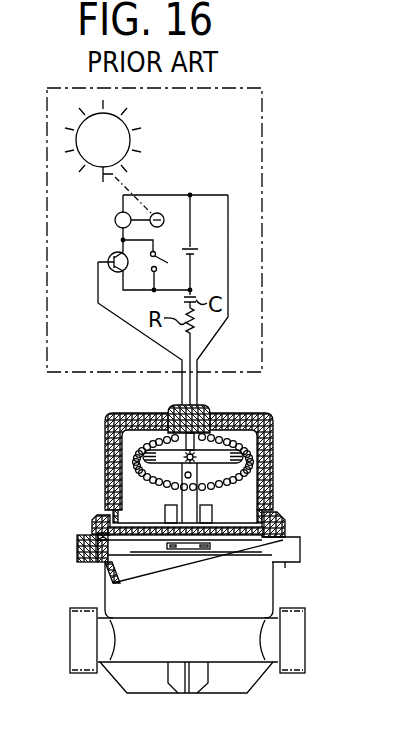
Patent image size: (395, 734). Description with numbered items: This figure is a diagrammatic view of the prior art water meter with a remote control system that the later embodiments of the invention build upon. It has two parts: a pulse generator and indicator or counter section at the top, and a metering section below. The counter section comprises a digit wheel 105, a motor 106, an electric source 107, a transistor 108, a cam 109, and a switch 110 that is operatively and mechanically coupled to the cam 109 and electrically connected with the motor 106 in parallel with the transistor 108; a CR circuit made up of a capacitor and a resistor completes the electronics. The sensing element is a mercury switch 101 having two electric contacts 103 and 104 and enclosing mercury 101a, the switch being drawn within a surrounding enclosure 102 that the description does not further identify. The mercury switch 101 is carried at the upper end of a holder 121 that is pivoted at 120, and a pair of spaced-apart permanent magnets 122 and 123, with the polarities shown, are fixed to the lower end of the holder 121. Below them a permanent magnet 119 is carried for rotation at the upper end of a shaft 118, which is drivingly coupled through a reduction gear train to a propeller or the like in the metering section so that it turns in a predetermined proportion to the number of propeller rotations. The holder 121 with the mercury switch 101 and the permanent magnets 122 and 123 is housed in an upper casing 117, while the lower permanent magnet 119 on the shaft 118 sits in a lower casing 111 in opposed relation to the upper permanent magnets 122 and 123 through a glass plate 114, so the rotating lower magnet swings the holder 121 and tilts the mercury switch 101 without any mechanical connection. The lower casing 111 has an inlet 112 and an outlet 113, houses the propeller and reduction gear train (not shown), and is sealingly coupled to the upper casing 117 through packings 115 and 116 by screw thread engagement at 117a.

The mercury switch 101 is at (163, 436).
The mercury 101a is at (198, 444).
The housing 102 is at (258, 418).
The electric contact 103 is at (246, 456).
The electric contact 104 is at (142, 452).
The digit wheel 105 is at (135, 125).
The motor 106 is at (116, 214).
The electric source 107 is at (197, 250).
The transistor 108 is at (110, 254).
The cam 109 is at (158, 213).
The switch 110 is at (168, 263).
The lower casing 111 is at (252, 672).
The inlet 112 is at (70, 629).
The outlet 113 is at (293, 633).
The glass plate 114 is at (108, 530).
The packing 115 is at (77, 547).
The packing 116 is at (95, 517).
The upper casing 117 is at (98, 560).
The screw thread engagement 117a is at (280, 518).
The shaft 118 is at (190, 552).
The permanent magnet 119 is at (212, 549).
The pivot 120 is at (192, 476).
The holder 121 is at (166, 481).
The permanent magnet 122 is at (212, 511).
The permanent magnet 123 is at (165, 511).